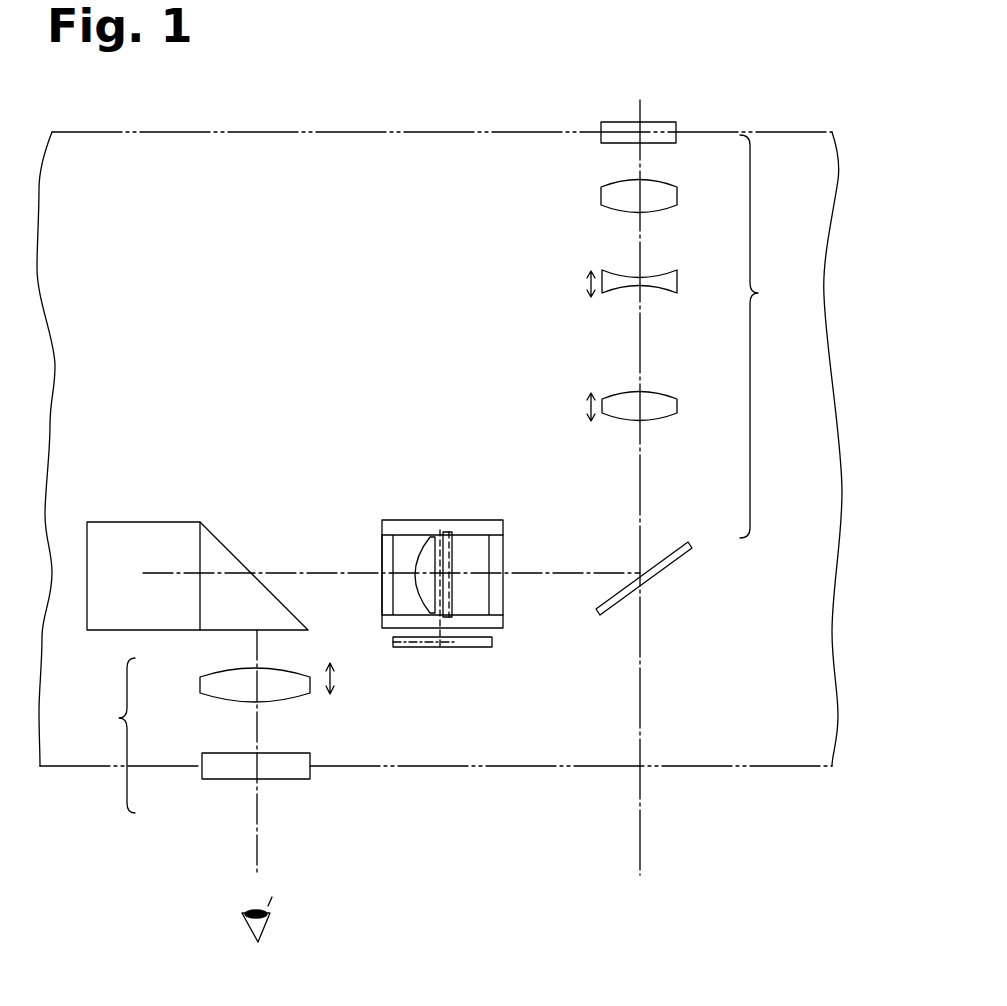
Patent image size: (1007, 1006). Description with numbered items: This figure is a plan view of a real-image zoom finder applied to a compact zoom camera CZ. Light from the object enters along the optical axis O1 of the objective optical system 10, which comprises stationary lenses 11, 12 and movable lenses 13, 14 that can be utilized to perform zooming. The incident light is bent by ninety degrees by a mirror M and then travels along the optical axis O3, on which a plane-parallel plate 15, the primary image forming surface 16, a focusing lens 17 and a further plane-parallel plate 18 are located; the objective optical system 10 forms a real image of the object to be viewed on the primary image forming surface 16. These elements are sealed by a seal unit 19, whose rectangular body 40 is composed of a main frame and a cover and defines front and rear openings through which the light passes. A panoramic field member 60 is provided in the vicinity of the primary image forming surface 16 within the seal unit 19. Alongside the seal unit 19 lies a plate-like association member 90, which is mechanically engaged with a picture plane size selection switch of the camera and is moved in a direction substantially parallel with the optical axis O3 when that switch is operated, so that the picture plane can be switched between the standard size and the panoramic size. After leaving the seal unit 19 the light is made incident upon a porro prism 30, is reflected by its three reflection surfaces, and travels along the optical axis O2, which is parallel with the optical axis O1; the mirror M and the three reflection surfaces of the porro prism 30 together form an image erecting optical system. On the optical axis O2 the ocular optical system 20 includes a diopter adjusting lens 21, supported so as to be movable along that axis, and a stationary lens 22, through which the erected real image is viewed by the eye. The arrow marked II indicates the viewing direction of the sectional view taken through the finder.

The objective optical system 10 is at (769, 336).
The stationary lens 11 is at (664, 140).
The stationary lens 12 is at (668, 190).
The movable lens 13 is at (664, 283).
The movable lens 14 is at (666, 402).
The plane-parallel plate 15 is at (503, 545).
The primary image forming surface 16 is at (424, 605).
The focusing lens 17 is at (430, 538).
The plane-parallel plate 18 is at (387, 558).
The seal unit 19 is at (518, 626).
The ocular optical system 20 is at (110, 735).
The diopter adjusting lens 21 is at (203, 690).
The stationary lens 22 is at (203, 762).
The porro prism 30 is at (163, 537).
The rectangular body 40 is at (445, 523).
The panoramic field member 60 is at (448, 553).
The association member 90 is at (455, 642).
The compact zoom camera CZ is at (364, 144).
The mirror M is at (672, 558).
The optical axis O1 is at (640, 352).
The optical axis O2 is at (258, 738).
The optical axis O3 is at (358, 578).
The section line II is at (363, 806).